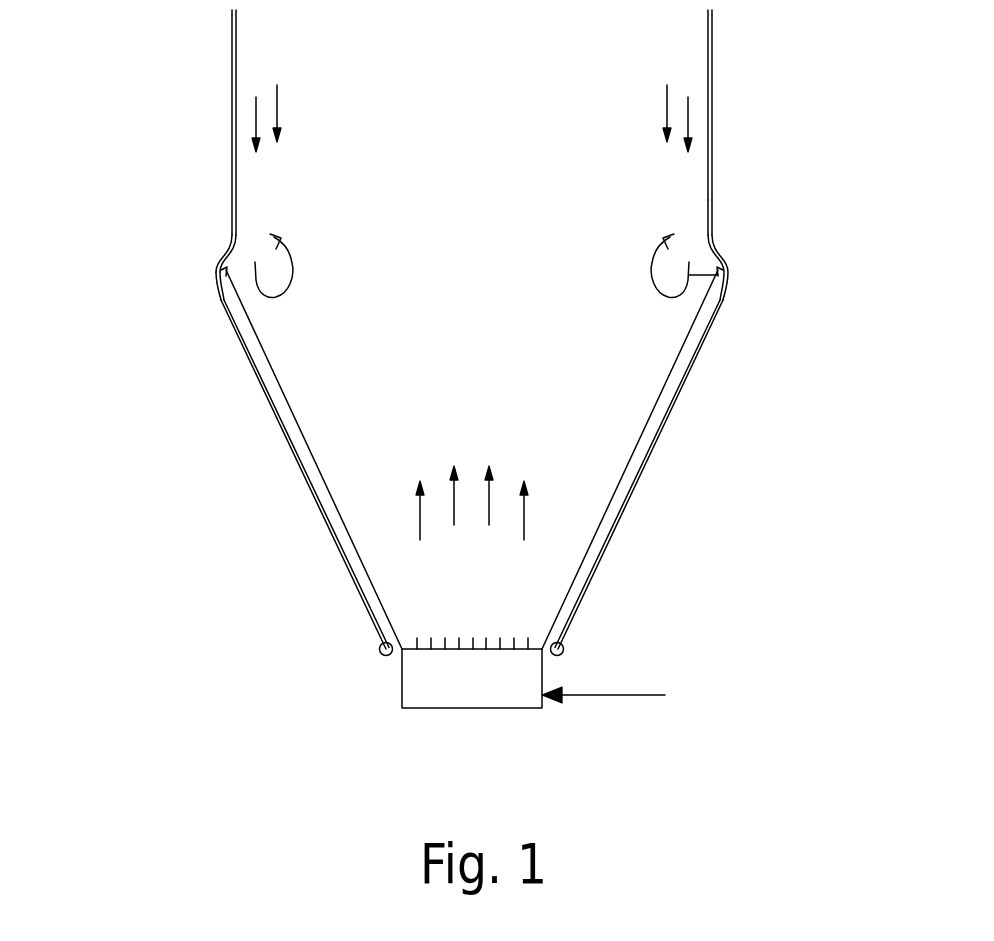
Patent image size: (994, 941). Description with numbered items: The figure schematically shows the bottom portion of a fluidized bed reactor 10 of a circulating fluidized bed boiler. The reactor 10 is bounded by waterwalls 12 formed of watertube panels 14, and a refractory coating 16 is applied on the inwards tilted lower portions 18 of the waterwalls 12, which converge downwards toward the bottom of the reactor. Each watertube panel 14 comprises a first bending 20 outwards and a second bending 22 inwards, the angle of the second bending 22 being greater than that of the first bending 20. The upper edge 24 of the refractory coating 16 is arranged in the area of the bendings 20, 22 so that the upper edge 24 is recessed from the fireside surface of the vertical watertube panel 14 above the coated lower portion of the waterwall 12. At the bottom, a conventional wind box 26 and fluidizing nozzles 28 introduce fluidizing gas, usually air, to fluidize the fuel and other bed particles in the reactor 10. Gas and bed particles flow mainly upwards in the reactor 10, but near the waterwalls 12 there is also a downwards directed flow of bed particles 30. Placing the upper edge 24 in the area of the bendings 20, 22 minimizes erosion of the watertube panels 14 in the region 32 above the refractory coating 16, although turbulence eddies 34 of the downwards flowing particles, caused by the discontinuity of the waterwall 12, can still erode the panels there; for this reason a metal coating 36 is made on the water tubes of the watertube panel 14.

The fluidized bed reactor 10 is at (487, 81).
The waterwall 12 is at (232, 59).
The watertube panel 14 is at (232, 107).
The refractory coating 16 is at (313, 473).
The inwards tilted lower portion 18 is at (260, 393).
The first bending 20 is at (231, 238).
The second bending 22 is at (217, 267).
The upper edge 24 is at (217, 287).
The wind box 26 is at (402, 695).
The fluidizing nozzles 28 is at (432, 642).
The downwards directed flow of bed particles 30 is at (710, 125).
The region 32 is at (712, 217).
The turbulence eddies 34 is at (726, 270).
The metal coating 36 is at (710, 190).